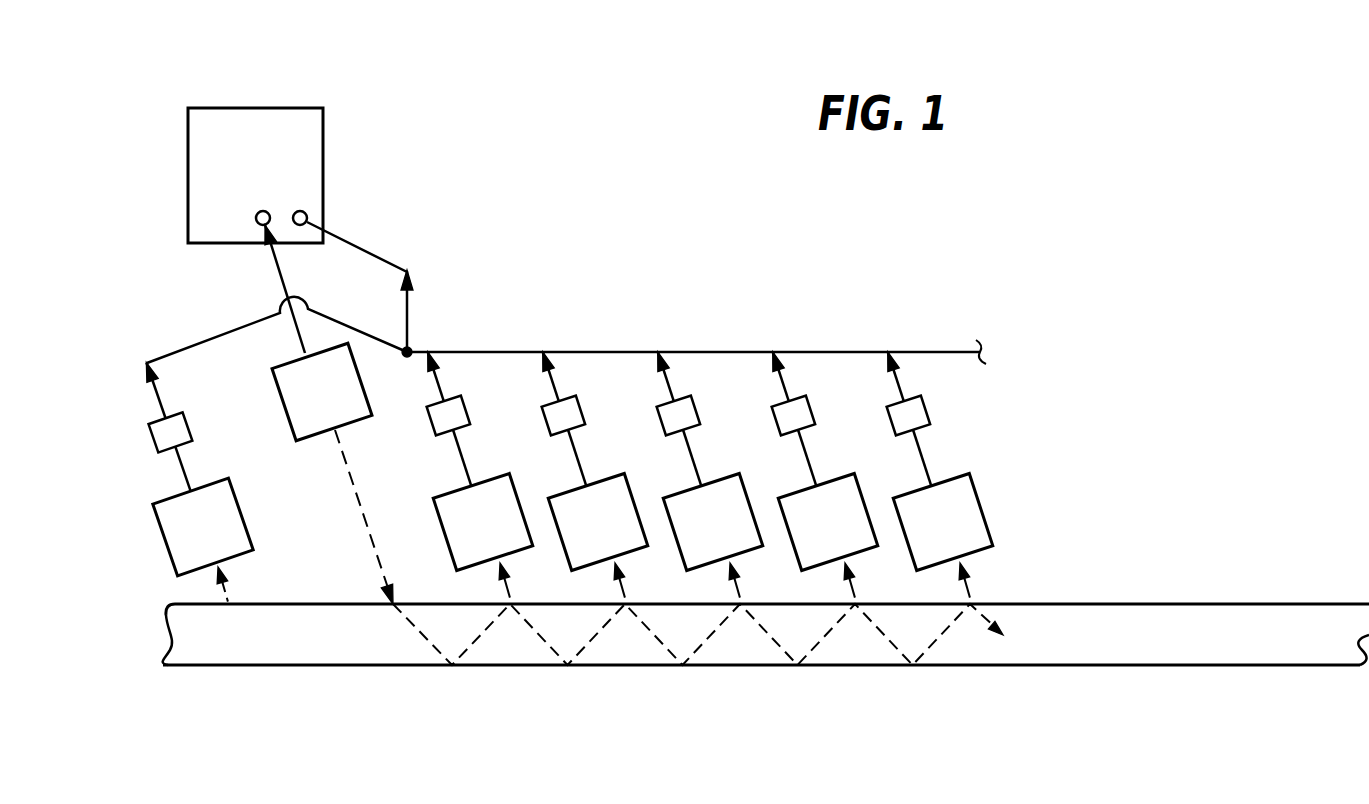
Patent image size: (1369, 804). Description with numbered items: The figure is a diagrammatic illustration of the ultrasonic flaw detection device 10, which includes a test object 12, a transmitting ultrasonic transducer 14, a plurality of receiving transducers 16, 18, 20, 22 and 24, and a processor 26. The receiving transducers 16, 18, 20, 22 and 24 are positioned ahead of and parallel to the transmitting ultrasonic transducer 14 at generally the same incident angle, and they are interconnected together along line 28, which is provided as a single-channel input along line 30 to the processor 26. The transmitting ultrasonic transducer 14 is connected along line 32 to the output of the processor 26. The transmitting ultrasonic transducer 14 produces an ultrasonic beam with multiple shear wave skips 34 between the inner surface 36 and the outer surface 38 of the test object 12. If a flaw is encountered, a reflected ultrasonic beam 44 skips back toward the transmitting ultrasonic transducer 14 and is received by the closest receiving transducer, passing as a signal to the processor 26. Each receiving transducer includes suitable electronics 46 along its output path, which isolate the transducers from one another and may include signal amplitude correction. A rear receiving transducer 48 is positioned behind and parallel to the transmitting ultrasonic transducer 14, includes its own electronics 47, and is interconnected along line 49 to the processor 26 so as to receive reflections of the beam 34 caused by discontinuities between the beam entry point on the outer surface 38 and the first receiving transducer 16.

The ultrasonic flaw detection device 10 is at (1105, 410).
The test object 12 is at (766, 637).
The transmitting ultrasonic transducer 14 is at (280, 400).
The receiving transducer 16 is at (452, 493).
The receiving transducer 18 is at (565, 494).
The receiving transducer 20 is at (680, 494).
The receiving transducer 22 is at (795, 494).
The receiving transducer 24 is at (910, 494).
The processor 26 is at (325, 153).
The line 28 is at (570, 352).
The line 30 is at (357, 243).
The line 32 is at (283, 283).
The shear wave skips 34 is at (360, 510).
The inner surface 36 is at (1083, 665).
The outer surface 38 is at (1070, 603).
The reflected ultrasonic beam 44 is at (968, 598).
The electronics 46 is at (466, 409).
The electronics 47 is at (148, 440).
The rear receiving transducer 48 is at (160, 535).
The line 49 is at (207, 342).